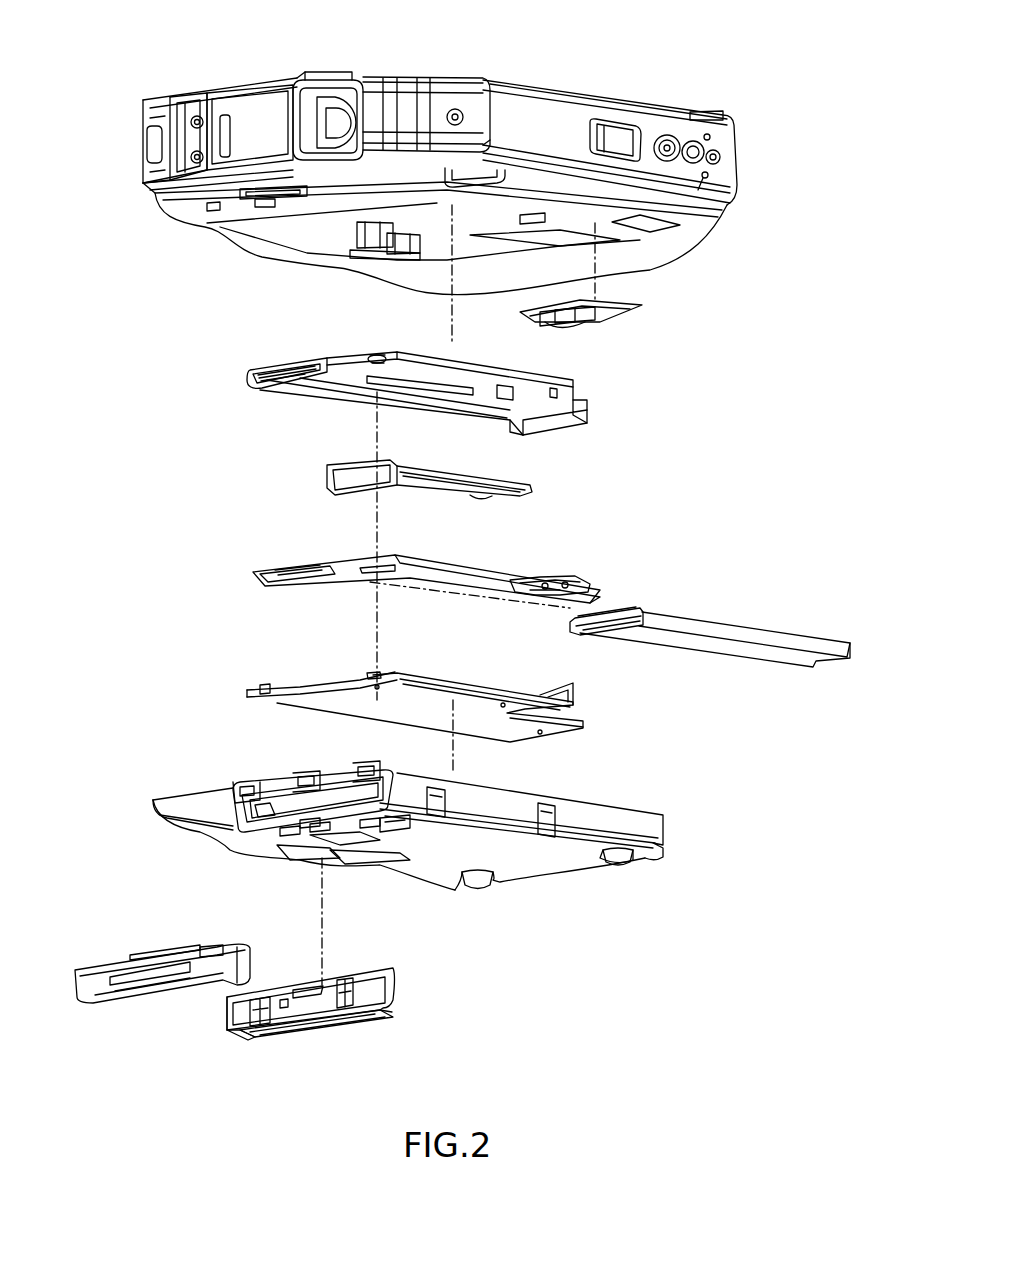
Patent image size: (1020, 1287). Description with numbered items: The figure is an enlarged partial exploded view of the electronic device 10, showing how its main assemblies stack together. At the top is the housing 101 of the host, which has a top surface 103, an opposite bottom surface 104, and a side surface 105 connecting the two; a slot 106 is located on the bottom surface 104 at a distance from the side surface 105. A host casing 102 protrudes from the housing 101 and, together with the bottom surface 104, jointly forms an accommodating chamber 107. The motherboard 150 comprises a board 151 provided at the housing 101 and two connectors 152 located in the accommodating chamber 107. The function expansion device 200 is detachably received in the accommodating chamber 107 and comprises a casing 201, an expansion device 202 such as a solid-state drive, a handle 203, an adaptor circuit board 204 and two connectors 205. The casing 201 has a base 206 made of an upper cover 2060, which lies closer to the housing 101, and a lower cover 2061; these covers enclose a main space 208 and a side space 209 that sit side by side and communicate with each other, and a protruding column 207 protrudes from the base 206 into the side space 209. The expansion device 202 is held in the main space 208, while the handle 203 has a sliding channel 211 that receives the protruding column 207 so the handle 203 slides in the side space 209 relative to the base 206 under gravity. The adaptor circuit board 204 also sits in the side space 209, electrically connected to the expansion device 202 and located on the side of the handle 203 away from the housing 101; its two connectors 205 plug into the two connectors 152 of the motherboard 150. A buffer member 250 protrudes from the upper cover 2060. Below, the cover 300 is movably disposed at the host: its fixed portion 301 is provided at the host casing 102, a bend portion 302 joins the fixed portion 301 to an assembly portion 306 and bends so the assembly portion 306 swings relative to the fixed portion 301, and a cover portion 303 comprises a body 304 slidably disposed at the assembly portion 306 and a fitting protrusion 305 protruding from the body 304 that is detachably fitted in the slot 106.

The electronic device 10 is at (145, 62).
The housing 101 is at (512, 120).
The host casing 102 is at (535, 858).
The top surface 103 is at (556, 94).
The bottom surface 104 is at (387, 205).
The side surface 105 is at (545, 130).
The slot 106 is at (290, 193).
The accommodating chamber 107 is at (380, 802).
The motherboard 150 is at (688, 312).
The board 151 is at (622, 316).
The connectors 152 is at (595, 328).
The function expansion device 200 is at (150, 389).
The casing 201 is at (130, 510).
The expansion device 202 is at (758, 635).
The handle 203 is at (490, 484).
The adaptor circuit board 204 is at (472, 582).
The connectors 205 is at (585, 582).
The base 206 is at (182, 325).
The protruding column 207 is at (348, 692).
The main space 208 is at (243, 692).
The side space 209 is at (378, 676).
The sliding channel 211 is at (457, 494).
The buffer member 250 is at (282, 380).
The upper cover 2060 is at (270, 366).
The lower cover 2061 is at (297, 693).
The cover 300 is at (133, 920).
The fixed portion 301 is at (308, 1032).
The bend portion 302 is at (258, 1036).
The cover portion 303 is at (258, 892).
The body 304 is at (206, 952).
The fitting protrusion 305 is at (136, 946).
The assembly portion 306 is at (235, 1010).